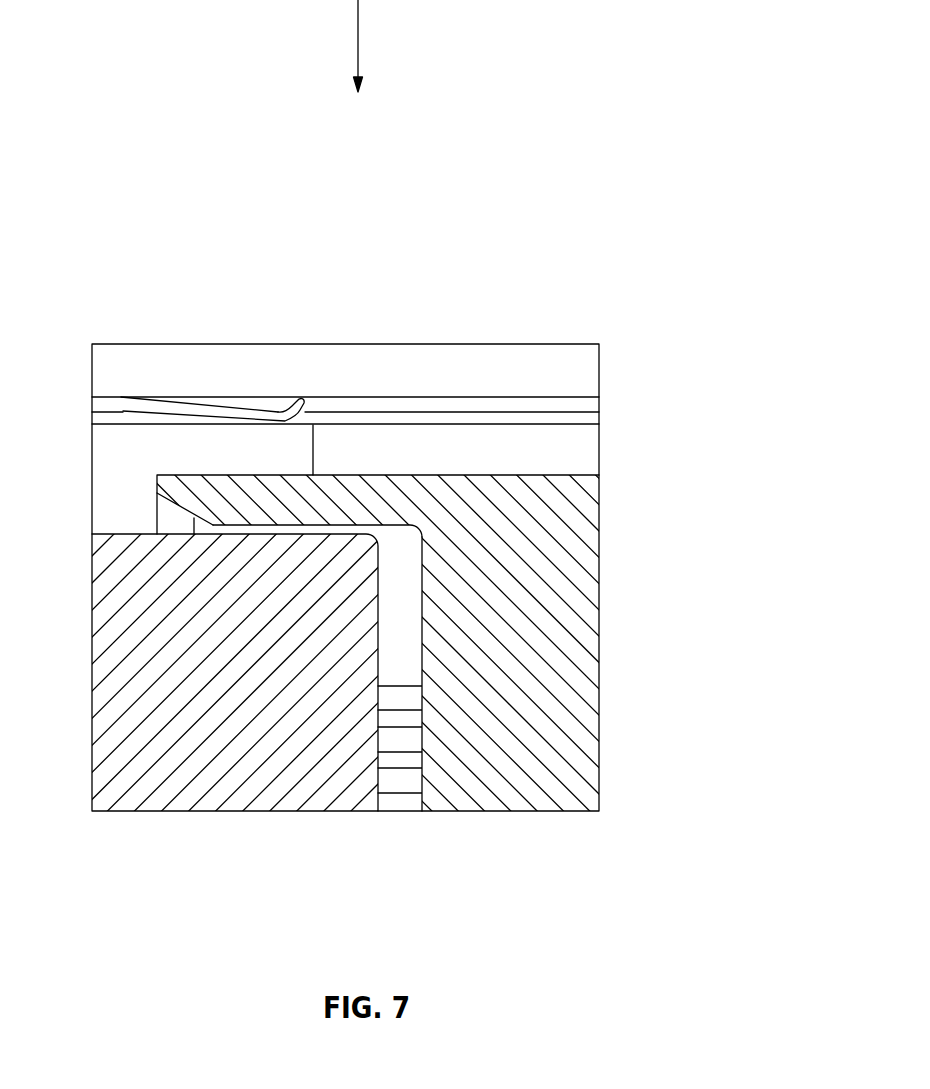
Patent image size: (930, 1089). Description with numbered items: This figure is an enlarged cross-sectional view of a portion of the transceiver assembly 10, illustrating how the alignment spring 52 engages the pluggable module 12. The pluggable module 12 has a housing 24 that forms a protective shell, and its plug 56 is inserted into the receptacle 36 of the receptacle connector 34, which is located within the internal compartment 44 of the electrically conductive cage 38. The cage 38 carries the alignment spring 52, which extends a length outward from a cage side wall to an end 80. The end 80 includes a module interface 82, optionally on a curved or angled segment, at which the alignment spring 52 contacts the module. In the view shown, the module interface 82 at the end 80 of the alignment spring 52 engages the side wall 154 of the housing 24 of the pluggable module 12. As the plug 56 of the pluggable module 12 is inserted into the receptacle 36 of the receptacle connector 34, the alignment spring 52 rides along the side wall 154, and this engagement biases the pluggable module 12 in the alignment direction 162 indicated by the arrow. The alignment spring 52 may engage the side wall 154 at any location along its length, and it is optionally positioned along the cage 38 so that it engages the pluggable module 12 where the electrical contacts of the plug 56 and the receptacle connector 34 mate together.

The transceiver assembly 10 is at (725, 186).
The pluggable module 12 is at (156, 440).
The housing 24 is at (200, 453).
The receptacle connector 34 is at (556, 662).
The receptacle 36 is at (315, 527).
The cage 38 is at (555, 398).
The internal compartment 44 is at (430, 450).
The alignment spring 52 is at (313, 348).
The plug 56 is at (216, 770).
The end 80 is at (262, 417).
The module interface 82 is at (273, 425).
The side wall 154 is at (182, 424).
The alignment direction 162 is at (358, 15).